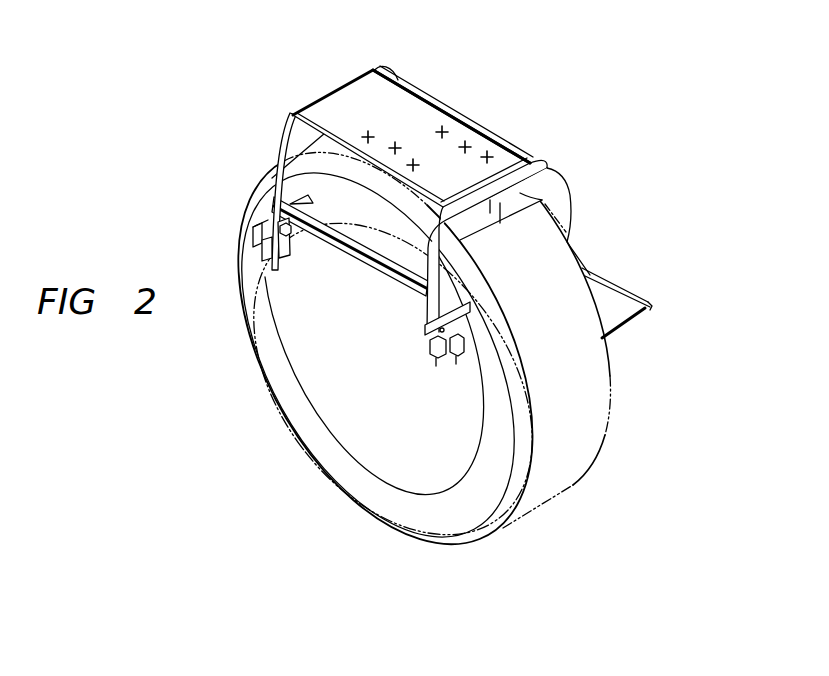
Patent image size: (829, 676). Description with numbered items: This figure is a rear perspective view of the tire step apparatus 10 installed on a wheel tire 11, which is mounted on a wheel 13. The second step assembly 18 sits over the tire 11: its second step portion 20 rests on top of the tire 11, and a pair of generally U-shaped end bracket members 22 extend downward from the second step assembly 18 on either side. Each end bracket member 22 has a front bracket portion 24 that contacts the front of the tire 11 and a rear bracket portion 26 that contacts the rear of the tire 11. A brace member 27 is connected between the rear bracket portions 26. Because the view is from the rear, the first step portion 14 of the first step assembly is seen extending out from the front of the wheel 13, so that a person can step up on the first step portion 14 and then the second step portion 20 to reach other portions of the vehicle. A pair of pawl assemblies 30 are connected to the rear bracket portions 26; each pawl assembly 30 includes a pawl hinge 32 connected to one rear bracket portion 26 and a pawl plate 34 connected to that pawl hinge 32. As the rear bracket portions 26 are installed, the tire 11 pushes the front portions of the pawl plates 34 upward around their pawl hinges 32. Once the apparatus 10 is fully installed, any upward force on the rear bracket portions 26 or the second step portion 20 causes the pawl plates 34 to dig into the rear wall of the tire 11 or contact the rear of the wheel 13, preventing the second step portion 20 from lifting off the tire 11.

The tire step apparatus 10 is at (540, 121).
The wheel tire 11 is at (575, 437).
The wheel 13 is at (470, 486).
The first step portion 14 is at (646, 308).
The second step assembly 18 is at (420, 106).
The second step portion 20 is at (450, 152).
The end bracket member 22 is at (552, 171).
The front bracket portion 24 is at (568, 214).
The rear bracket portion 26 is at (277, 177).
The brace member 27 is at (375, 262).
The pawl assembly 30 is at (256, 252).
The pawl hinge 32 is at (293, 223).
The pawl plate 34 is at (260, 224).